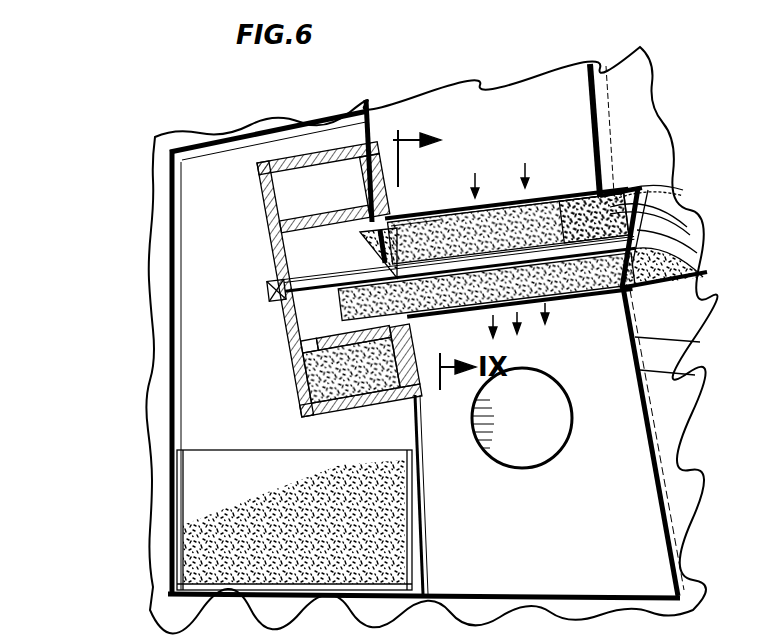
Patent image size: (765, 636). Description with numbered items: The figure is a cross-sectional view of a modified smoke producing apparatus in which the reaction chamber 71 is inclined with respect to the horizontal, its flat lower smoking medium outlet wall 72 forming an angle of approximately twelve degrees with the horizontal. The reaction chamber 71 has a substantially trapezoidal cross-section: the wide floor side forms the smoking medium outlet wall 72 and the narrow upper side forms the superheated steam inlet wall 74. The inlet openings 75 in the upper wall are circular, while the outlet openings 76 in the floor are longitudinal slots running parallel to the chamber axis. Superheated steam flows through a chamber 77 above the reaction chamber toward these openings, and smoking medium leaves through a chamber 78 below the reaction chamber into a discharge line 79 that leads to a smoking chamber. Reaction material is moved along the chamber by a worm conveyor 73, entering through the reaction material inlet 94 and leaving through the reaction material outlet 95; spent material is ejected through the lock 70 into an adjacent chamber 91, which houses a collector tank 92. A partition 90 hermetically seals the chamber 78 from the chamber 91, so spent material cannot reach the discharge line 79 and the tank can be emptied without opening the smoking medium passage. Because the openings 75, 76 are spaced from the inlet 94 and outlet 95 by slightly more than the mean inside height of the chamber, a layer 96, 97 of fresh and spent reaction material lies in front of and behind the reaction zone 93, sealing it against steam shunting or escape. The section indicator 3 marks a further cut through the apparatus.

The drive rod 3 is at (582, 304).
The lock 70 is at (288, 158).
The reaction chamber 71 is at (557, 186).
The smoking medium outlet wall 72 is at (462, 315).
The worm conveyor 73 is at (680, 210).
The superheated steam inlet wall 74 is at (427, 210).
The steam inlet openings 75 is at (507, 200).
The smoking medium outlet openings 76 is at (547, 297).
The chamber above the reaction chamber 77 is at (410, 110).
The chamber below the reaction chamber 78 is at (647, 518).
The discharge line 79 is at (527, 468).
The partition 90 is at (425, 487).
The adjacent chamber 91 is at (183, 360).
The collector tank 92 is at (193, 492).
The reaction zone 93 is at (517, 283).
The reaction material inlet 94 is at (583, 205).
The reaction material outlet 95 is at (372, 240).
The layer of fresh reaction material 96 is at (567, 210).
The layer of spent reaction material 97 is at (430, 297).